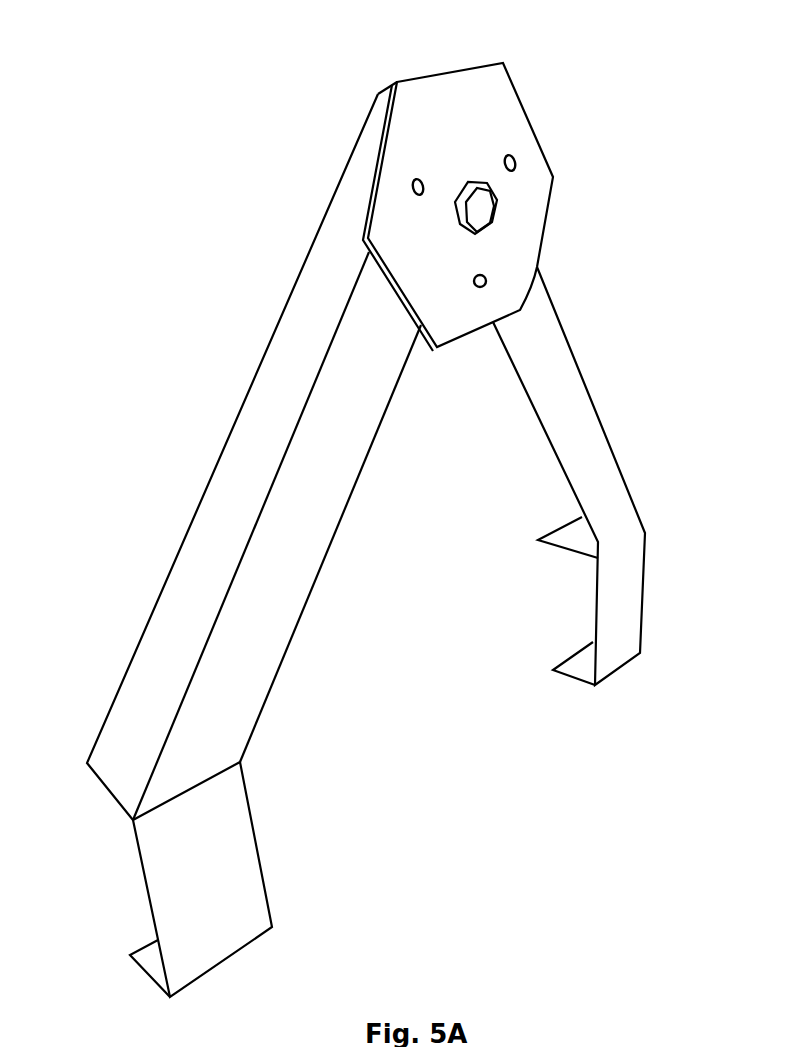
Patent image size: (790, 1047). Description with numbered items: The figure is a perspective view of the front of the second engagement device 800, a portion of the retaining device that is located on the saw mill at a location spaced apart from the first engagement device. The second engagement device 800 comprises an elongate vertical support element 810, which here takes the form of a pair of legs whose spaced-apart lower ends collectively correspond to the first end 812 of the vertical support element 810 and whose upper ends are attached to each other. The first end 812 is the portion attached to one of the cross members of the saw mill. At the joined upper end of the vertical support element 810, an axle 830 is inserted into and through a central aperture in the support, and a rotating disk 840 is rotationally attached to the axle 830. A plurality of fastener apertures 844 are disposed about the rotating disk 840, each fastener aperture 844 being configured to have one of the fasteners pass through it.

The second engagement device 800 is at (196, 283).
The elongate vertical support element 810 is at (248, 452).
The first end 812 is at (615, 595).
The axle 830 is at (485, 203).
The rotating disk 840 is at (505, 125).
The fastener apertures 844 is at (515, 158).